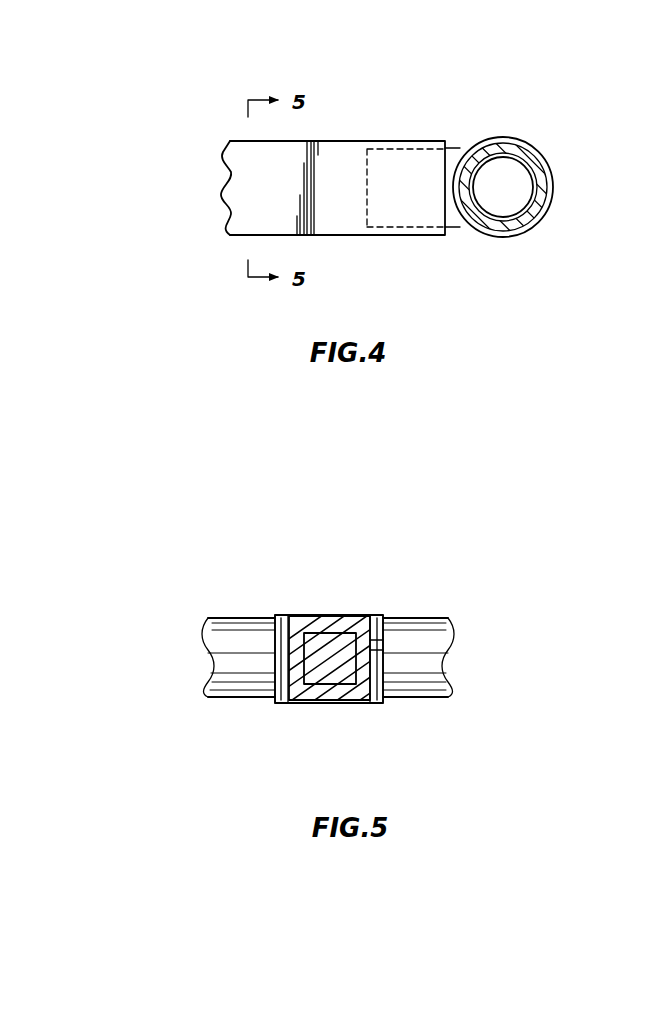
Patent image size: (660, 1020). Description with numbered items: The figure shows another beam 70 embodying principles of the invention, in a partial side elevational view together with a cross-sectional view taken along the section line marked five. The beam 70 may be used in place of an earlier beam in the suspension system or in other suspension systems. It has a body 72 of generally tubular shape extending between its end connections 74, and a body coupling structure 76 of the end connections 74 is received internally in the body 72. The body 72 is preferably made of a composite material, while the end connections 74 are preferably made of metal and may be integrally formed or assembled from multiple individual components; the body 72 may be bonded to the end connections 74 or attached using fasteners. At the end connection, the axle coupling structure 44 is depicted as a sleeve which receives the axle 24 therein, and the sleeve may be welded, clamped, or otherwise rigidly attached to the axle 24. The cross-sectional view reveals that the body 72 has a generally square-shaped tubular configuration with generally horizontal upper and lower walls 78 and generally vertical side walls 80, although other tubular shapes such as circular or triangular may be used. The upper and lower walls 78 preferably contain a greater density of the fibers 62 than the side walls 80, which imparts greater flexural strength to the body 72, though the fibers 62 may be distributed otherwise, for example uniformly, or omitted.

In FIG. 4, the beam 70 is at (435, 97).
In FIG. 5, the beam 70 is at (200, 601).
In FIG. 4, the body 72 is at (331, 138).
In FIG. 5, the body 72 is at (386, 645).
In FIG. 4, the end connections 74 is at (475, 238).
In FIG. 5, the end connections 74 is at (363, 703).
In FIG. 4, the body coupling structure 76 is at (458, 147).
In FIG. 5, the body coupling structure 76 is at (277, 680).
In FIG. 4, the axle coupling structure 44 is at (545, 152).
In FIG. 5, the axle coupling structure 44 is at (285, 616).
In FIG. 4, the axle 24 is at (548, 197).
In FIG. 5, the axle 24 is at (440, 698).
In FIG. 5, the upper and lower walls 78 is at (350, 618).
In FIG. 5, the fibers 62 is at (378, 616).
In FIG. 5, the side walls 80 is at (290, 655).